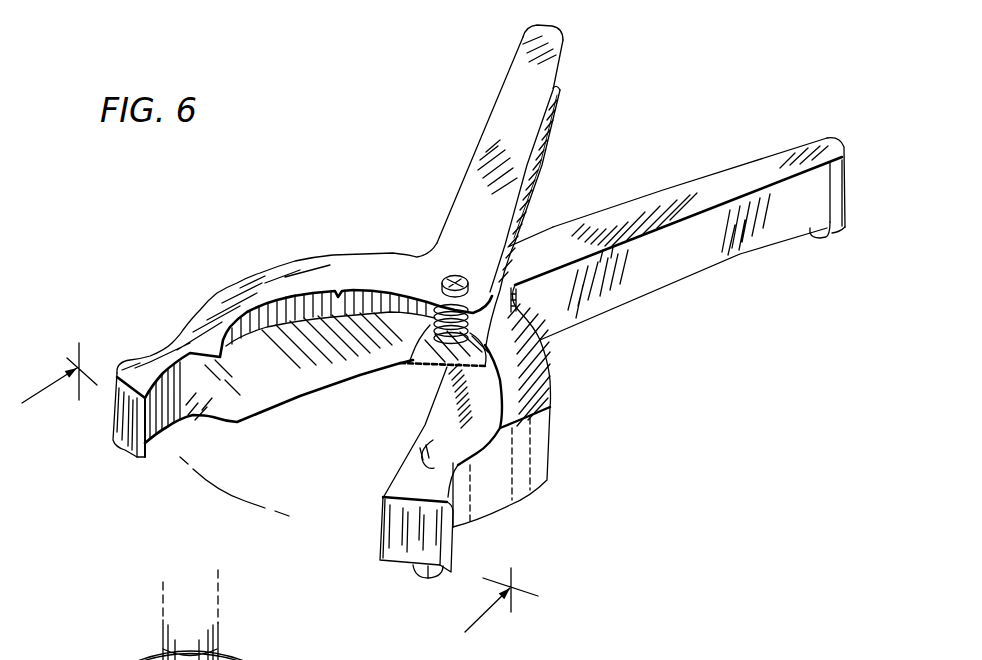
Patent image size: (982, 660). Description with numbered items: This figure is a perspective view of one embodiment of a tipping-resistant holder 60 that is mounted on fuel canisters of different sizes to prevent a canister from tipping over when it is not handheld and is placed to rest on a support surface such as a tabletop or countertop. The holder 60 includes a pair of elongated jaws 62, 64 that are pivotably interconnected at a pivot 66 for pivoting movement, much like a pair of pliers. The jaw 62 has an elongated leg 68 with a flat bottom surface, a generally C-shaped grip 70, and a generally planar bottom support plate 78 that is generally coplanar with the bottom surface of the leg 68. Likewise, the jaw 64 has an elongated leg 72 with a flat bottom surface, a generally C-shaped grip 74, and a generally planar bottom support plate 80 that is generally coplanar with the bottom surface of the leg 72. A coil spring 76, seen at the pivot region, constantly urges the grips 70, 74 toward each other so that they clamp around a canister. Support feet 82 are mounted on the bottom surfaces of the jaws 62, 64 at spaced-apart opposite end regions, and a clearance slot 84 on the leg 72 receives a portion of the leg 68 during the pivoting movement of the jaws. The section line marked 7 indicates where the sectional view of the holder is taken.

The section line 7- 7 is at (280, 488).
The tipping-resistant holder 60 is at (403, 195).
The jaw 62 is at (370, 265).
The jaw 64 is at (540, 369).
The pivot 66 is at (462, 276).
The elongated leg 68 is at (543, 38).
The C-shaped grip 70 is at (338, 277).
The elongated leg 72 is at (762, 175).
The C-shaped grip 74 is at (477, 497).
The coil spring 76 is at (398, 365).
The bottom support plate 78 is at (252, 398).
The bottom support plate 80 is at (445, 420).
The support feet 82 is at (122, 452).
The clearance slot 84 is at (546, 240).